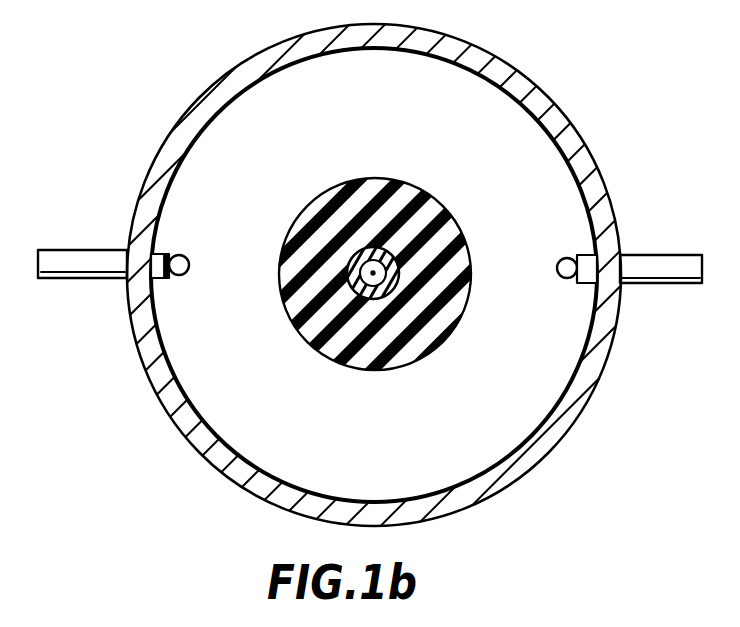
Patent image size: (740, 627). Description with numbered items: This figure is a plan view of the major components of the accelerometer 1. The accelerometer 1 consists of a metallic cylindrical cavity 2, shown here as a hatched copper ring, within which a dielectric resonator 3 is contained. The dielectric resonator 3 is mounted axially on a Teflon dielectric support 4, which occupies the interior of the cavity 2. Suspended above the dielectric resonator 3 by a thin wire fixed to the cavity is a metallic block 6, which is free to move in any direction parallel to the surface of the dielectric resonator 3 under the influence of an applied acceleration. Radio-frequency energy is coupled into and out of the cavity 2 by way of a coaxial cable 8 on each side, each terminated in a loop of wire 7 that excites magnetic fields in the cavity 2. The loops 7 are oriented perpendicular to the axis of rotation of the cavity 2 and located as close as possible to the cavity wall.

The accelerometer 1 is at (205, 62).
The metallic cylindrical cavity 2 is at (392, 49).
The dielectric resonator 3 is at (438, 230).
The Teflon dielectric support 4 is at (389, 434).
The metallic block 6 is at (404, 259).
The loop of wire 7 is at (184, 255).
The coaxial cable 8 is at (83, 258).